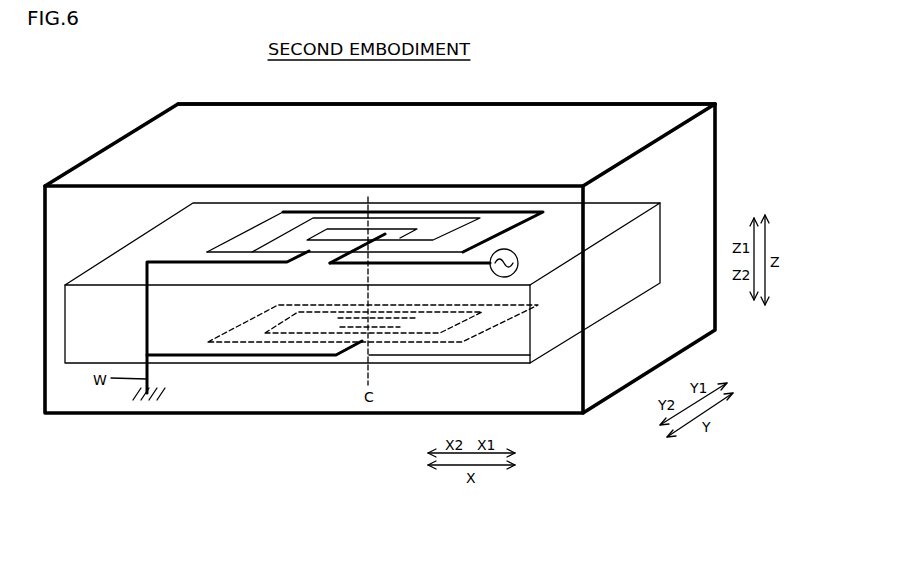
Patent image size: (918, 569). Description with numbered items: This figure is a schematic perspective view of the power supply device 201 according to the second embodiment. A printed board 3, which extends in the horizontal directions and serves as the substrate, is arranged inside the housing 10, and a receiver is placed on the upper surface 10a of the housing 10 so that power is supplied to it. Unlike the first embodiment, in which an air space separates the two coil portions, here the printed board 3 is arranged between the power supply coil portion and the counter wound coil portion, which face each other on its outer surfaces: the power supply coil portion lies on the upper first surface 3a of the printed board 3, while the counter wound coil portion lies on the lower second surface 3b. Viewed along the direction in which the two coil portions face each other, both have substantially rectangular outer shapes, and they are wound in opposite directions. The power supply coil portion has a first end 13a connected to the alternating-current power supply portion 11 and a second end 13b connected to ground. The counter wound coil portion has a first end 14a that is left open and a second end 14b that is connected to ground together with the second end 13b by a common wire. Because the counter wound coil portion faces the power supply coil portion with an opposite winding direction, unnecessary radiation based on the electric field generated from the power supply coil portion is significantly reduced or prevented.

The power supply device 201 is at (729, 107).
The housing 10 is at (72, 413).
The upper surface 10a is at (349, 150).
The alternating-current power supply portion 11 is at (513, 250).
The first end 13a is at (387, 235).
The second end 13b is at (300, 238).
The first end 14a is at (358, 347).
The second end 14b is at (366, 347).
The printed board 3 is at (421, 269).
The first surface 3a is at (628, 211).
The second surface 3b is at (637, 307).